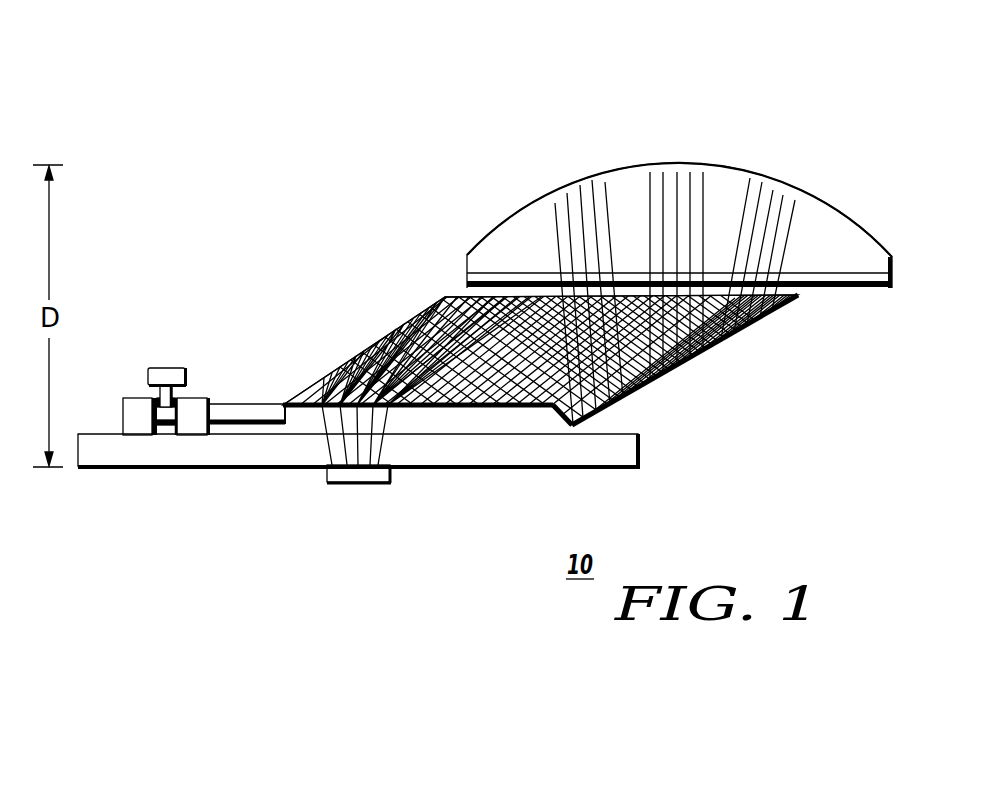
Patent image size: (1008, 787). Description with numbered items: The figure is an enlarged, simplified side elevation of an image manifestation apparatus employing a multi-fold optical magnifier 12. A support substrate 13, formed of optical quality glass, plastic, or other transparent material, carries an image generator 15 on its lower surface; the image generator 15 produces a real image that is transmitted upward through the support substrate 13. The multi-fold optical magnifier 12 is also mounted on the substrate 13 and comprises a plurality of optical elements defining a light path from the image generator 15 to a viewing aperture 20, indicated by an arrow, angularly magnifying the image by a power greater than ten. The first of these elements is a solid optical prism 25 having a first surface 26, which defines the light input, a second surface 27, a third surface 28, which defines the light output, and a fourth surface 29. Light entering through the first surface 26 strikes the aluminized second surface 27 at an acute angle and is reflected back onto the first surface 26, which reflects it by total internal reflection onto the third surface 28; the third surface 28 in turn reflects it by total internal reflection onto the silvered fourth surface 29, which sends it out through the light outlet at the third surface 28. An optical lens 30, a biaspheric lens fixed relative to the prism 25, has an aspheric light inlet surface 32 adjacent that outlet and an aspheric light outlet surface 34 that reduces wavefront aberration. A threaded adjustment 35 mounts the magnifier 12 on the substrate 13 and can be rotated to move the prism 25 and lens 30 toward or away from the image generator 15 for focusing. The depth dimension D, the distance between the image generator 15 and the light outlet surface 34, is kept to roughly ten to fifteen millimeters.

The multi-fold optical magnifier 12 is at (364, 216).
The support substrate 13 is at (121, 456).
The image generator 15 is at (362, 472).
The viewing aperture 20 is at (681, 90).
The optical prism 25 is at (492, 407).
The first surface 26 is at (523, 407).
The second surface 27 is at (322, 371).
The third surface 28 is at (463, 298).
The fourth surface 29 is at (637, 390).
The optical lens 30 is at (838, 252).
The light inlet surface 32 is at (827, 288).
The light outlet surface 34 is at (702, 163).
The threaded adjustment 35 is at (123, 410).